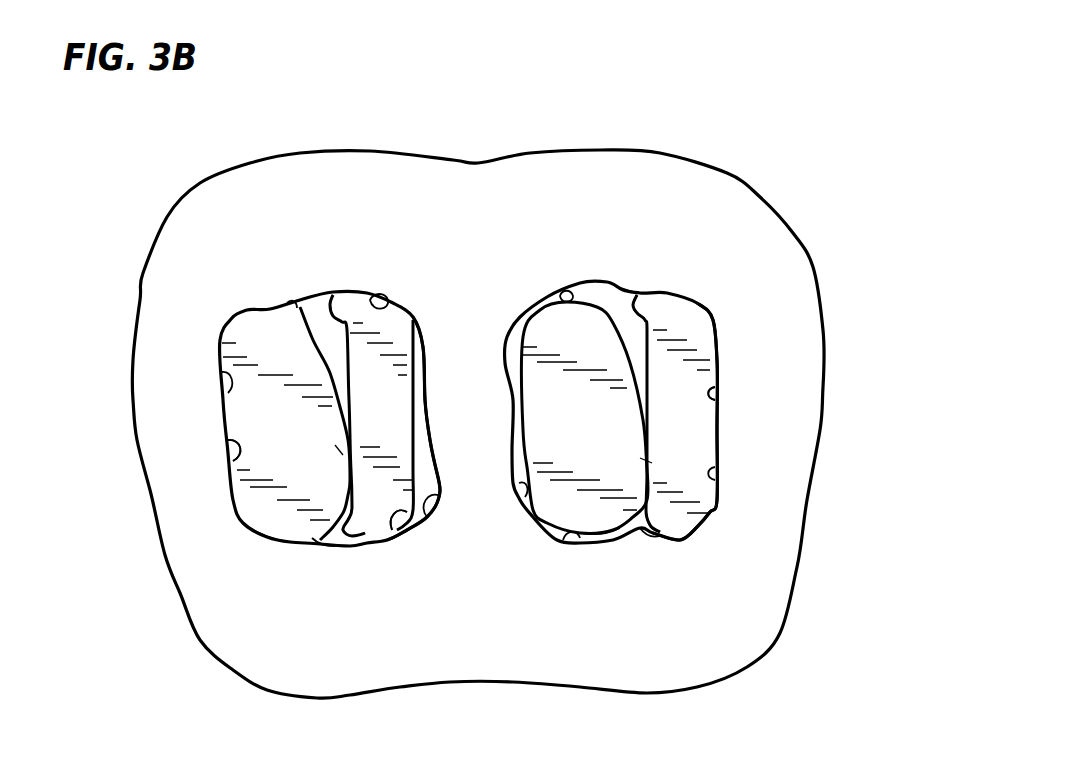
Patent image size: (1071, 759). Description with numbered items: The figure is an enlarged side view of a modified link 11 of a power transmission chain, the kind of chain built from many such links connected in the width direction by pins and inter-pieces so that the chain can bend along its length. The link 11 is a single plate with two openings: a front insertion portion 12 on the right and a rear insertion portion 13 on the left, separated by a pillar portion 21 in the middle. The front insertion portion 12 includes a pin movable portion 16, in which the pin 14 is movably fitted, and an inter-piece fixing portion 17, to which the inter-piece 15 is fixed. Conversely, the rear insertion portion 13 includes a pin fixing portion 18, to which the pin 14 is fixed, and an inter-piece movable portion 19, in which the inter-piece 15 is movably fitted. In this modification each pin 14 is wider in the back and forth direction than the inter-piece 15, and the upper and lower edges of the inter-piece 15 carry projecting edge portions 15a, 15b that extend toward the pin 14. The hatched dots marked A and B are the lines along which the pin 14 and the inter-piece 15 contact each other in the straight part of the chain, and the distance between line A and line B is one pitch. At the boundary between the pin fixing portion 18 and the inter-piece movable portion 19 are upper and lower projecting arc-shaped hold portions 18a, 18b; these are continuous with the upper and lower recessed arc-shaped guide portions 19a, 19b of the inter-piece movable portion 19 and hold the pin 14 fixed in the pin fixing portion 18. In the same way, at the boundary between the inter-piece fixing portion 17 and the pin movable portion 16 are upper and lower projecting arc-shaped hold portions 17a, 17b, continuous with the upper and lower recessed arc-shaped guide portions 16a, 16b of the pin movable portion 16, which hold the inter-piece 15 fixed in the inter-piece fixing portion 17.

The link 11 is at (817, 264).
The pillar portion 21 is at (470, 350).
The pin fixing portion 18 is at (225, 396).
The inter-piece 15 is at (387, 413).
The inter-piece movable portion 19 is at (430, 517).
The rear insertion portion 13 is at (228, 458).
The pin 14 is at (250, 501).
The pin movable portion 16 is at (523, 507).
The inter-piece fixing portion 17 is at (716, 473).
The front insertion portion 12 is at (712, 400).
The upper projecting arc-shaped hold portion 18a is at (297, 300).
The upper projecting edge portion 15a is at (340, 307).
The upper recessed arc-shaped guide portion 19a is at (389, 300).
The lower projecting arc-shaped hold portion 18b is at (322, 548).
The lower projecting edge portion 15b is at (354, 527).
The lower recessed arc-shaped guide portion 19b is at (392, 530).
The upper recessed arc-shaped guide portion 16a is at (572, 293).
The upper projecting arc-shaped hold portion 17a is at (628, 288).
The lower recessed arc-shaped guide portion 16b is at (580, 547).
The lower projecting arc-shaped hold portion 17b is at (633, 547).
The contact line A is at (344, 456).
The contact line B is at (652, 463).